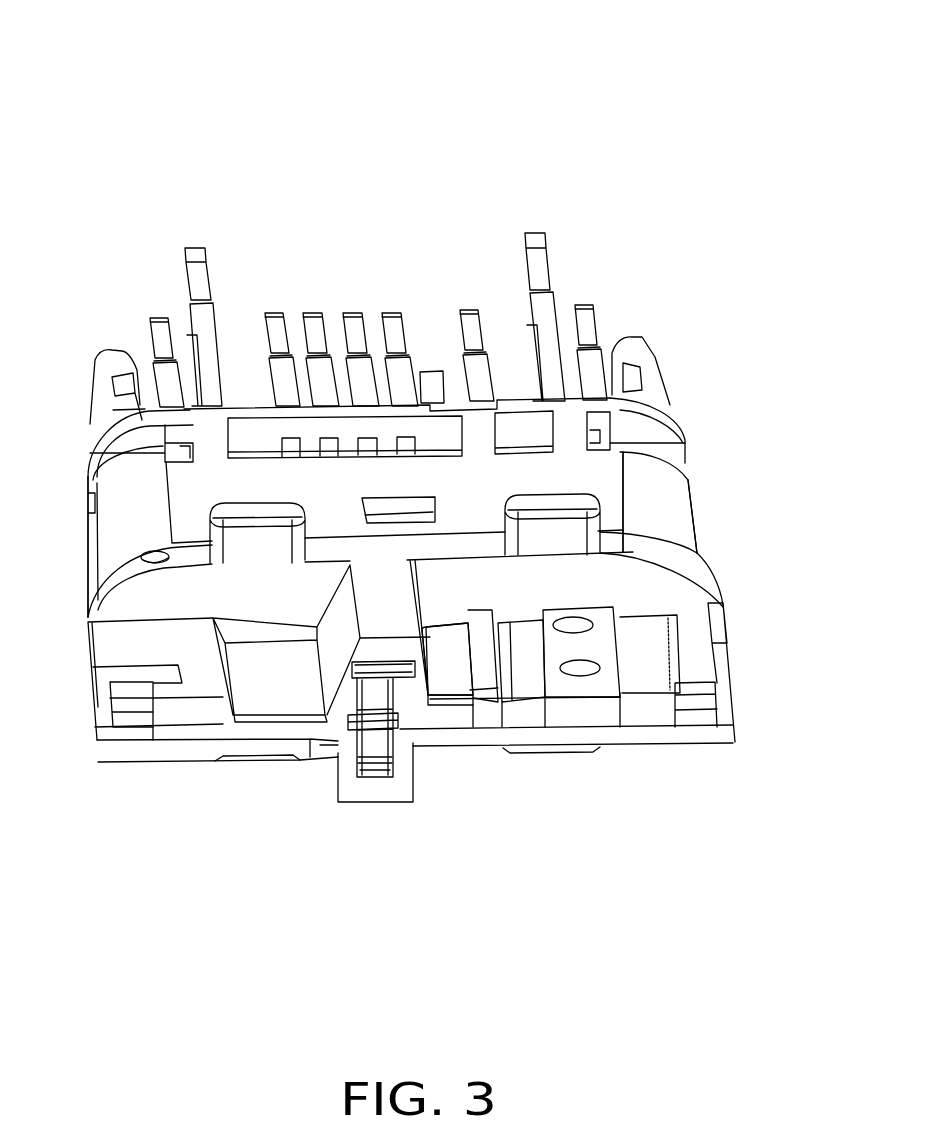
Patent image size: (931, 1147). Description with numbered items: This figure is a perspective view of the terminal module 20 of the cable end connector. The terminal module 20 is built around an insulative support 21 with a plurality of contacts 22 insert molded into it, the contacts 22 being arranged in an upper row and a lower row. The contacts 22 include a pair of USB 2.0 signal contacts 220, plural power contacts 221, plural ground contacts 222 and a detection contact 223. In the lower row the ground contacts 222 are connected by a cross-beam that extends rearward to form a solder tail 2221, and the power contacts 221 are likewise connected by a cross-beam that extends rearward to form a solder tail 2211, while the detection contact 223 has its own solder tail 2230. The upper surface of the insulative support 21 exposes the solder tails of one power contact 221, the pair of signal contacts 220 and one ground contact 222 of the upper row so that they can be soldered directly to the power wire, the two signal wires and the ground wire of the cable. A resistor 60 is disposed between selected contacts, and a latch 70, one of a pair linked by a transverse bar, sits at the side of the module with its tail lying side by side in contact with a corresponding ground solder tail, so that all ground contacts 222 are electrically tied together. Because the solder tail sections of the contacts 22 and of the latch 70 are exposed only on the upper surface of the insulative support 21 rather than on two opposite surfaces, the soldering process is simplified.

The terminal module 20 is at (452, 108).
The insulative support 21 is at (673, 507).
The contact 22 is at (542, 275).
The resistor 60 is at (325, 781).
The latch 70 is at (653, 385).
The USB 2.0 signal contact 220 is at (390, 320).
The power contact 221 is at (275, 327).
The ground contact 222 is at (160, 333).
The detection contact 223 is at (318, 328).
The solder tail 2211 is at (368, 765).
The solder tail 2221 is at (452, 673).
The solder tail 2230 is at (357, 735).